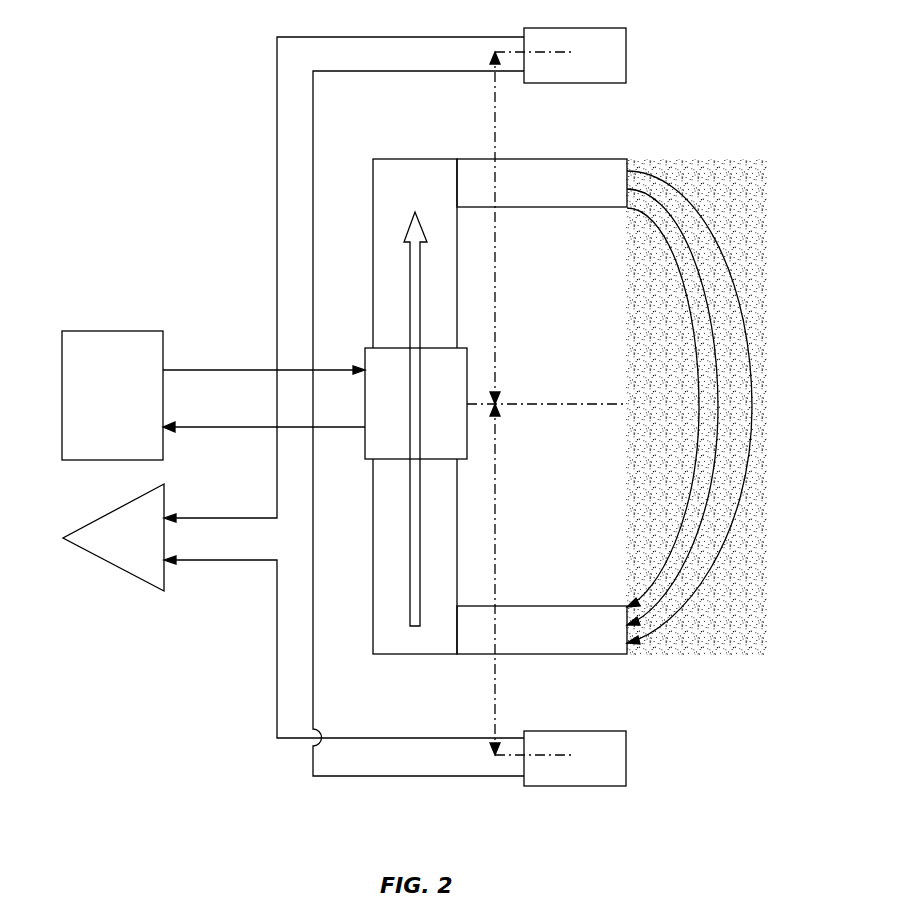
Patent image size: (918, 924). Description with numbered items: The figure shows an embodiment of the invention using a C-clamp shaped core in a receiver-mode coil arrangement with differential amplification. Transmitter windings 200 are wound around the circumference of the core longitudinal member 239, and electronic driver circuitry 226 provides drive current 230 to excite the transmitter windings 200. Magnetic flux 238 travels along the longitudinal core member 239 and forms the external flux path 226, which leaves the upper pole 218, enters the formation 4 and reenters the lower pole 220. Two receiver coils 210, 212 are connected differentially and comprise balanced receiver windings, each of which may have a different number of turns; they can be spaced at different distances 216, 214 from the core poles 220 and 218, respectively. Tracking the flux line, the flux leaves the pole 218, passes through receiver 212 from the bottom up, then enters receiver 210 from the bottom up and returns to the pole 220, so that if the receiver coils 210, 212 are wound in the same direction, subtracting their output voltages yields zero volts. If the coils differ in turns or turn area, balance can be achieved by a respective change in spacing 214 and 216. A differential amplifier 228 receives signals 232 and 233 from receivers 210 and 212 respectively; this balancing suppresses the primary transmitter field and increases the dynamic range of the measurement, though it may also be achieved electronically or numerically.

The formation 4 is at (751, 221).
The transmitter windings 200 is at (467, 380).
The receiver coil 210 is at (566, 787).
The receiver coil 212 is at (587, 28).
The spacing 214 is at (495, 260).
The spacing 216 is at (495, 480).
The upper pole 218 is at (551, 159).
The lower pole 220 is at (565, 655).
The external flux path 226 is at (742, 307).
The differential amplifier 228 is at (90, 521).
The drive current 230 is at (228, 370).
The signal 232 is at (252, 561).
The signal 233 is at (252, 518).
The magnetic flux 238 is at (415, 557).
The core longitudinal member 239 is at (373, 258).